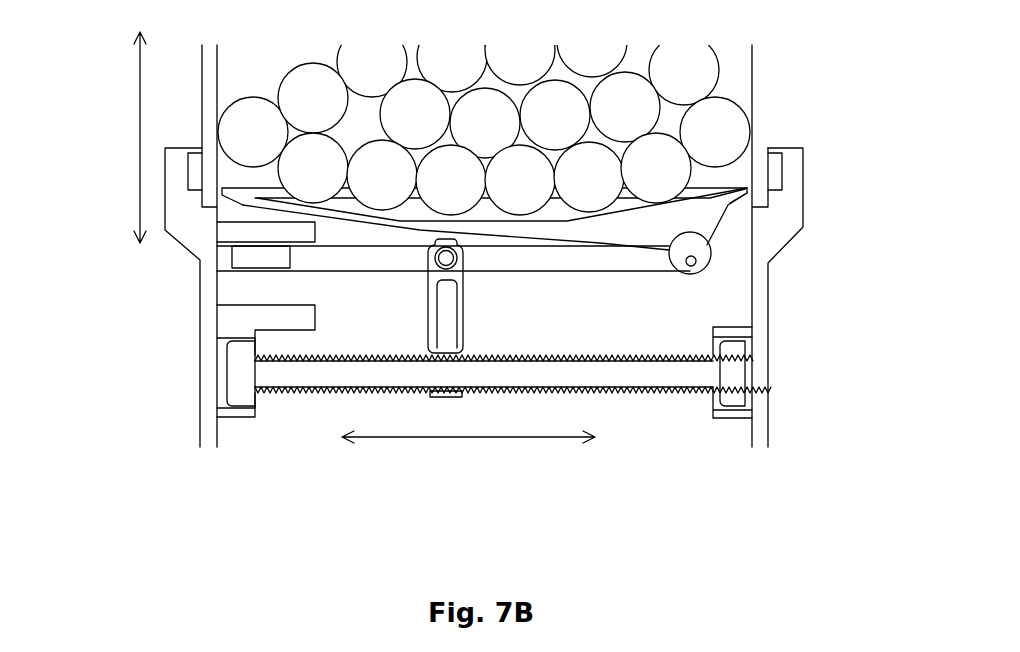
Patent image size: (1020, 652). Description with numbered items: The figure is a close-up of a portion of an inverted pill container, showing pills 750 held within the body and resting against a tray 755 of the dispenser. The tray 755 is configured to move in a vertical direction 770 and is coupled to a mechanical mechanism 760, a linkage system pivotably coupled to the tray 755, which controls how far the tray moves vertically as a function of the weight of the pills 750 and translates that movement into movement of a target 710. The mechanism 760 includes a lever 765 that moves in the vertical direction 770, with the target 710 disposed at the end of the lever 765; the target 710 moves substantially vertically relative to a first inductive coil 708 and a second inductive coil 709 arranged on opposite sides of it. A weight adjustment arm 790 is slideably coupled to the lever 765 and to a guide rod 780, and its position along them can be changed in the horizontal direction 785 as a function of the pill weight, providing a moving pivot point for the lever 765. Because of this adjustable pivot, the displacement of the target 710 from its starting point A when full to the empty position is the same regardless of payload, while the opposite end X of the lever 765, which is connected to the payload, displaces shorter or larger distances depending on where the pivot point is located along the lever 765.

The first inductive coil 708 is at (214, 244).
The second inductive coil 709 is at (214, 314).
The target 710 is at (259, 271).
The pills 750 is at (574, 134).
The tray 755 is at (712, 190).
The mechanical mechanism 760 is at (734, 299).
The lever 765 is at (378, 257).
The vertical direction 770 is at (140, 125).
The guide rod 780 is at (630, 373).
The horizontal direction 785 is at (449, 484).
The weight adjustment arm 790 is at (445, 300).
The starting point A is at (223, 266).
The opposite end of the lever X is at (696, 259).